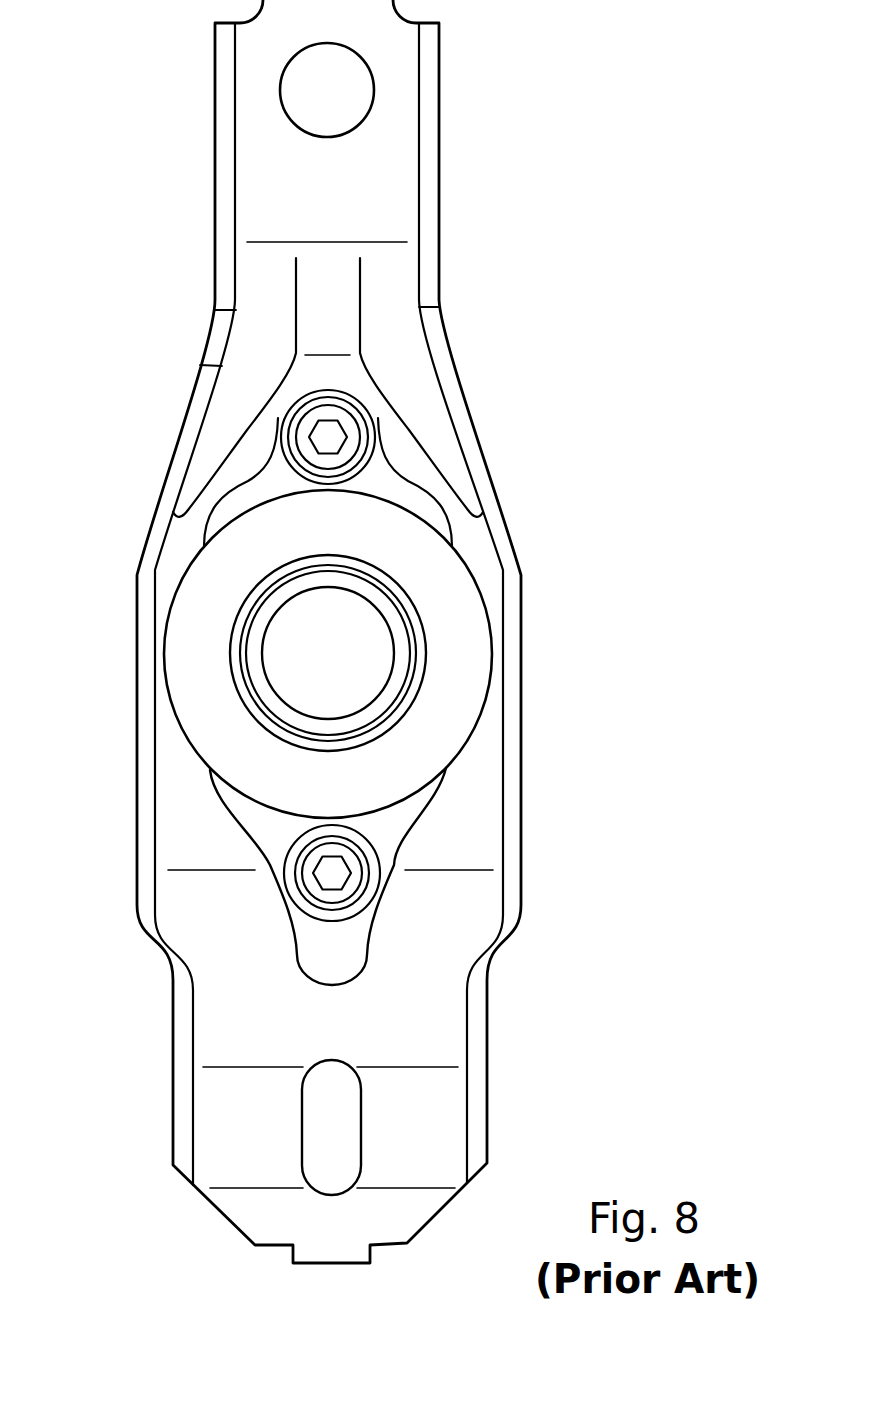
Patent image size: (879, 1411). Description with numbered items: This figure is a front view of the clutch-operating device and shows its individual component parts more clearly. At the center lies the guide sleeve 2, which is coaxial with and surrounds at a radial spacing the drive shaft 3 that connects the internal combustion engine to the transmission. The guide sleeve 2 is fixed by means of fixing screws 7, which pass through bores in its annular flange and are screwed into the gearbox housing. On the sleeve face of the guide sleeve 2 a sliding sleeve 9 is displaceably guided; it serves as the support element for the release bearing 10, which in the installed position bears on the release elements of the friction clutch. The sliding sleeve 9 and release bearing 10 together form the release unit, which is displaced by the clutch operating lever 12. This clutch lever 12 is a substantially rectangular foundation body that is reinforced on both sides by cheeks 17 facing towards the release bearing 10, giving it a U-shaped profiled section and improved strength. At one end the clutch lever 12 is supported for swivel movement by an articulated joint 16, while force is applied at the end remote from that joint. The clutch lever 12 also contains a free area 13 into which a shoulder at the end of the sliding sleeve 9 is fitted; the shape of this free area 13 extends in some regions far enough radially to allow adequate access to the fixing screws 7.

The guide sleeve 2 is at (410, 663).
The drive shaft 3 is at (352, 700).
The fixing screws 7 is at (352, 863).
The sliding sleeve 9 is at (413, 608).
The release bearing 10 is at (200, 705).
The clutch operating lever 12 is at (191, 327).
The free area 13 is at (310, 955).
The articulated joint 16 is at (262, 80).
The cheeks 17 is at (186, 448).